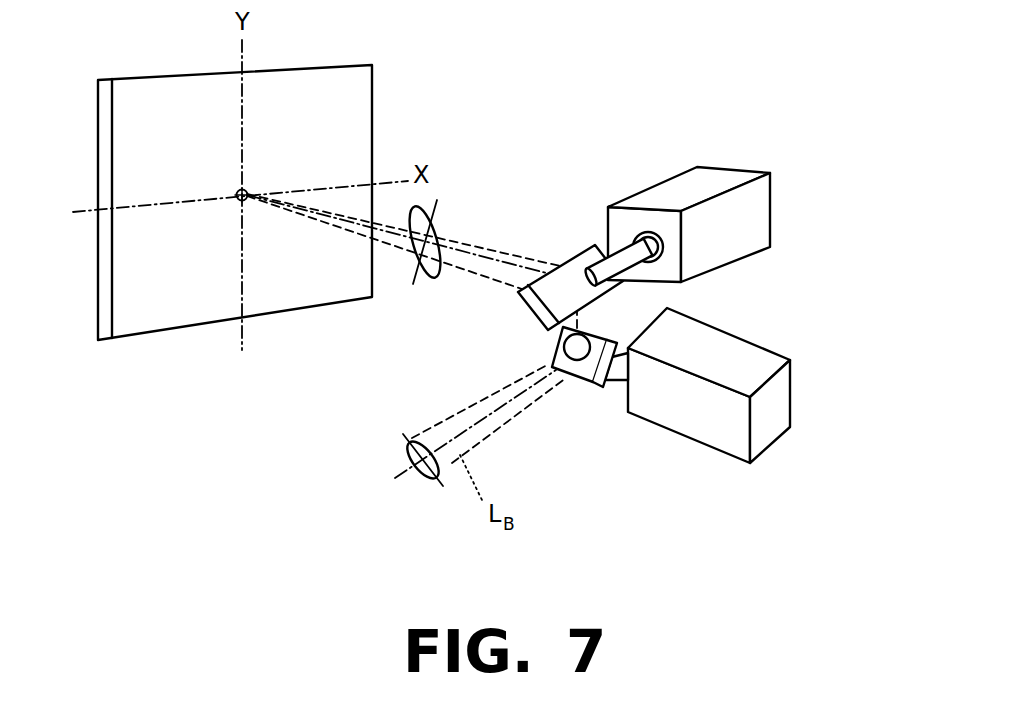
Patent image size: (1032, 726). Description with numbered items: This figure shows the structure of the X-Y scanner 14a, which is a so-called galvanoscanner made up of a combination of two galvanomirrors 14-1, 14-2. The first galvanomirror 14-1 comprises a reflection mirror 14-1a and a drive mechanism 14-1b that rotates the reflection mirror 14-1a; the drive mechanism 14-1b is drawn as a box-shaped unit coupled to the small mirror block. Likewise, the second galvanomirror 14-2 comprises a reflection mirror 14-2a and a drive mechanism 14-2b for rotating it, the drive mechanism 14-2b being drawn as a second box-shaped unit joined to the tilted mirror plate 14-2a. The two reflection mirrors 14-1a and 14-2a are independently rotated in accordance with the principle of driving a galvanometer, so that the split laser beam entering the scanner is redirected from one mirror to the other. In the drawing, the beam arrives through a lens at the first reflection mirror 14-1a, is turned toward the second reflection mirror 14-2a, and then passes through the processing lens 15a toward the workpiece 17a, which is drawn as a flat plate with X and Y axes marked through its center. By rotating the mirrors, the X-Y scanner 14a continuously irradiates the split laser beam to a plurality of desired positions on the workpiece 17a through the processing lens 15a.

The workpiece 17a is at (188, 332).
The processing lens 15a is at (430, 270).
The reflection mirror 14-2a is at (565, 265).
The galvanomirror 14-2 is at (597, 227).
The drive mechanism 14-2b is at (757, 203).
The X-Y scanner 14a is at (790, 296).
The reflection mirror 14-1a is at (585, 385).
The galvanomirror 14-1 is at (613, 393).
The drive mechanism 14-1b is at (783, 412).